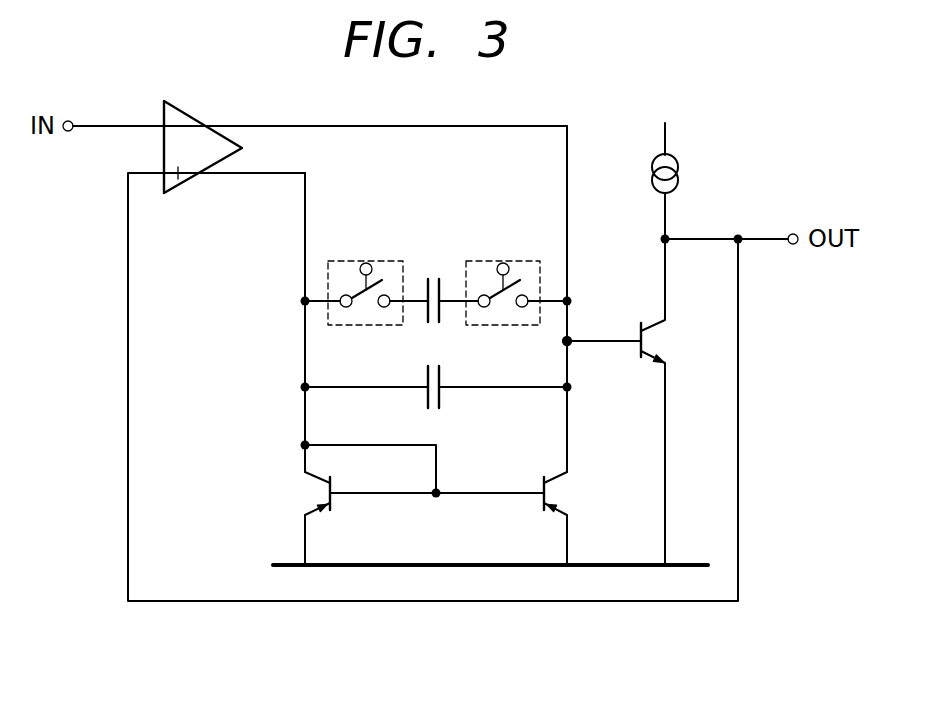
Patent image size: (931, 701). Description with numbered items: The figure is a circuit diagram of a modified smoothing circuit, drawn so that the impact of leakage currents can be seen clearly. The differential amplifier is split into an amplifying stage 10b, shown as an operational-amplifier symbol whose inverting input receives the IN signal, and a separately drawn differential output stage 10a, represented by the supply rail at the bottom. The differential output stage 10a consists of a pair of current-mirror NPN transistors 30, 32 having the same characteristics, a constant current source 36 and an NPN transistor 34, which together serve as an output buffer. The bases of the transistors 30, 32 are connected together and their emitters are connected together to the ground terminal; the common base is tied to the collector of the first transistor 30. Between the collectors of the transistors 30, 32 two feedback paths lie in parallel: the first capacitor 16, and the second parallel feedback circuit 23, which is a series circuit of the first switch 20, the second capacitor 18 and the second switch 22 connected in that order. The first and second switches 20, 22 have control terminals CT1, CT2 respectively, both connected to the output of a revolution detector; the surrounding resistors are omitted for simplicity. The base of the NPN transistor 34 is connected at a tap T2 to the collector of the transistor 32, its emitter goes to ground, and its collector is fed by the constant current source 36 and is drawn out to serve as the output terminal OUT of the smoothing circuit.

The differential output stage 10a is at (316, 576).
The amplifying stage 10b is at (188, 107).
The first capacitor 16 is at (444, 372).
The second capacitor 18 is at (433, 278).
The first switch 20 is at (345, 260).
The second switch 22 is at (523, 260).
The second parallel feedback circuit 23 is at (461, 256).
The first transistor 30 is at (306, 495).
The NPN transistor 32 is at (570, 495).
The NPN transistor 34 is at (655, 318).
The constant current source 36 is at (677, 161).
The tap T2 is at (570, 344).
The control terminal CT1 is at (385, 249).
The control terminal CT2 is at (497, 263).